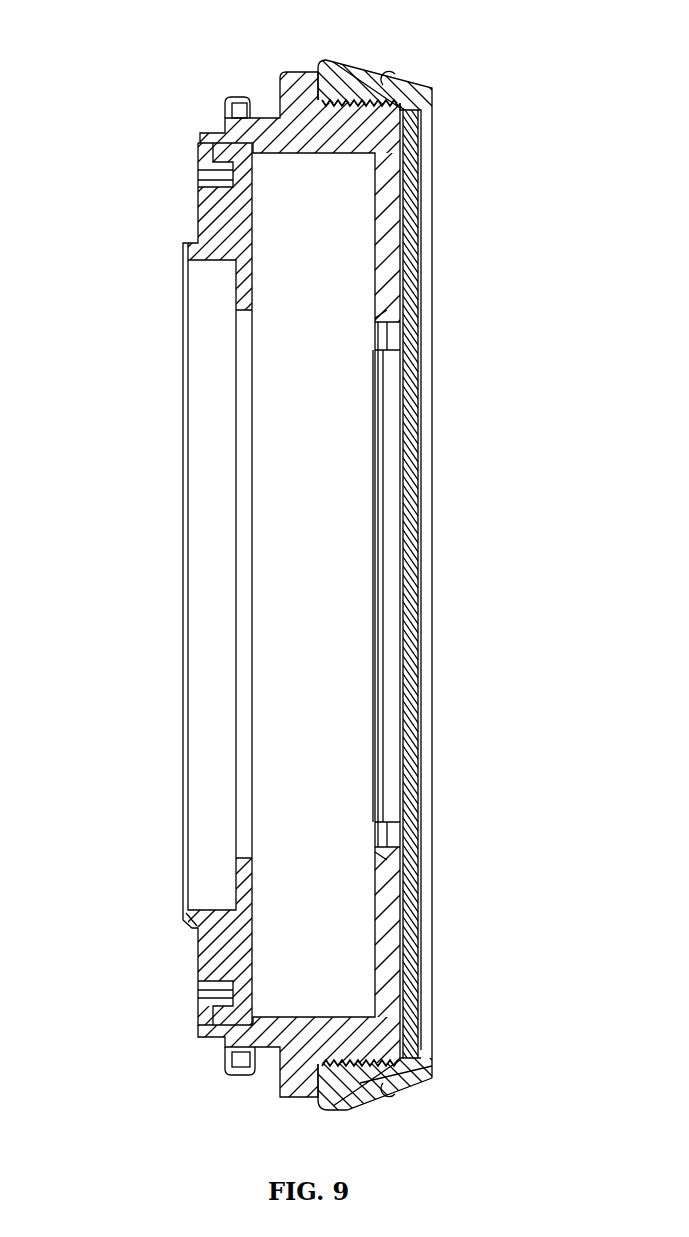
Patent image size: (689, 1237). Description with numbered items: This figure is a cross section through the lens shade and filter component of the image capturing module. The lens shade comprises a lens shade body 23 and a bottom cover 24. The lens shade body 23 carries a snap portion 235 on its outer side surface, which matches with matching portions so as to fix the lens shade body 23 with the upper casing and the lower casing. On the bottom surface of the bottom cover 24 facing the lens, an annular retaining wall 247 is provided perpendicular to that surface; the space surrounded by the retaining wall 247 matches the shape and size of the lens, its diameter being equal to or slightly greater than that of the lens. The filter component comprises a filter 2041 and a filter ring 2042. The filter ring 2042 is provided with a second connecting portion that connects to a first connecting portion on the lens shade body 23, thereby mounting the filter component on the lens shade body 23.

The lens shade body 23 is at (303, 135).
The snap portion 235 is at (268, 110).
The bottom cover 24 is at (220, 215).
The retaining wall 247 is at (183, 917).
The filter 2041 is at (418, 188).
The filter ring 2042 is at (347, 78).